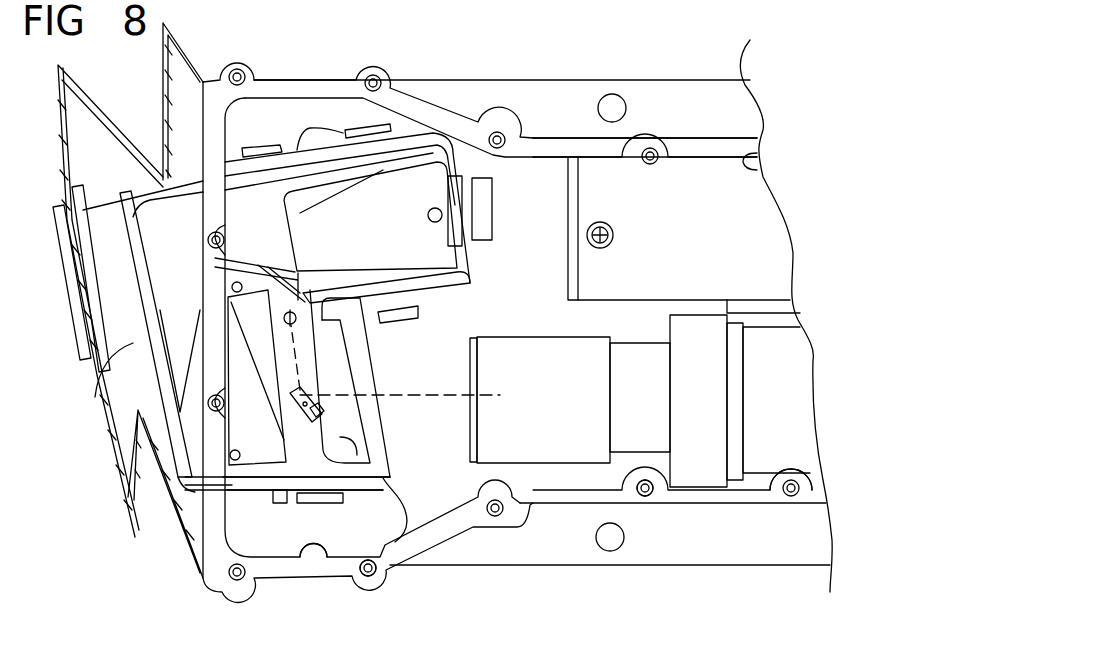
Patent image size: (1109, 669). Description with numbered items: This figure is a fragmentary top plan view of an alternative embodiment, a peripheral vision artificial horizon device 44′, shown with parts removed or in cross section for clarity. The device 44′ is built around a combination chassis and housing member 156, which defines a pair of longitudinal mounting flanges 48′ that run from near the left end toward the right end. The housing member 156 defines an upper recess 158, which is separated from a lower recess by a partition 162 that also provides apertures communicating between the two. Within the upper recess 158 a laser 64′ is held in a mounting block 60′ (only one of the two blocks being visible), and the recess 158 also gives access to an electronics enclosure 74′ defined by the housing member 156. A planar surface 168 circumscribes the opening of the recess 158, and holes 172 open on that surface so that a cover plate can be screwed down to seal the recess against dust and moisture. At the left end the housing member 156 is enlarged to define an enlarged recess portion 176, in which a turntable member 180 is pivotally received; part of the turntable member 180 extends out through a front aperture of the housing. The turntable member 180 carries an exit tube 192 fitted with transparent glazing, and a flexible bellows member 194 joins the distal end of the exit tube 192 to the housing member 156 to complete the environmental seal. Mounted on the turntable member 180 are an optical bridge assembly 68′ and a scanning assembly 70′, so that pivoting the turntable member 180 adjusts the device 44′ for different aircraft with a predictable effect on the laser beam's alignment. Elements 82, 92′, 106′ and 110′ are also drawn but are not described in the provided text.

The peripheral vision artificial horizon device 44′ is at (684, 72).
The longitudinal mounting flanges 48′ is at (563, 113).
The mounting block 60′ is at (713, 434).
The laser 64′ is at (788, 434).
The optical bridge assembly 68′ is at (320, 363).
The scanning assembly 70′ is at (262, 212).
The electronics enclosure 74′ is at (752, 232).
The pivot 82 is at (309, 325).
The link 92′ is at (300, 424).
The box 106′ is at (385, 234).
The lower box 110′ is at (275, 444).
The combination chassis and housing member 156 is at (773, 310).
The upper recess 158 is at (762, 170).
The partition 162 is at (545, 332).
The planar surface 168 is at (813, 494).
The holes 172 is at (648, 497).
The enlarged portion of recess 176 is at (313, 560).
The turntable member 180 is at (142, 192).
The exit tube 192 is at (100, 397).
The flexible bellows member 194 is at (182, 38).